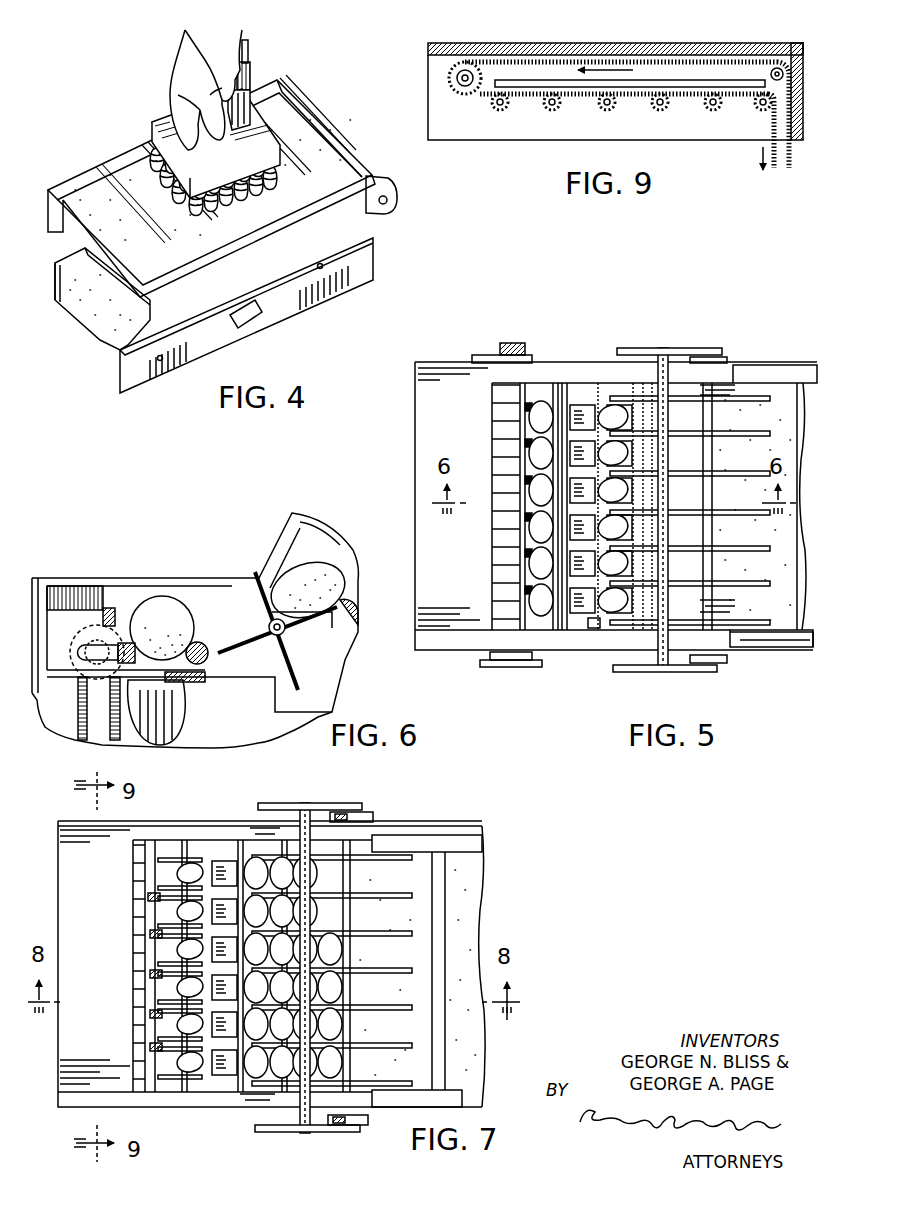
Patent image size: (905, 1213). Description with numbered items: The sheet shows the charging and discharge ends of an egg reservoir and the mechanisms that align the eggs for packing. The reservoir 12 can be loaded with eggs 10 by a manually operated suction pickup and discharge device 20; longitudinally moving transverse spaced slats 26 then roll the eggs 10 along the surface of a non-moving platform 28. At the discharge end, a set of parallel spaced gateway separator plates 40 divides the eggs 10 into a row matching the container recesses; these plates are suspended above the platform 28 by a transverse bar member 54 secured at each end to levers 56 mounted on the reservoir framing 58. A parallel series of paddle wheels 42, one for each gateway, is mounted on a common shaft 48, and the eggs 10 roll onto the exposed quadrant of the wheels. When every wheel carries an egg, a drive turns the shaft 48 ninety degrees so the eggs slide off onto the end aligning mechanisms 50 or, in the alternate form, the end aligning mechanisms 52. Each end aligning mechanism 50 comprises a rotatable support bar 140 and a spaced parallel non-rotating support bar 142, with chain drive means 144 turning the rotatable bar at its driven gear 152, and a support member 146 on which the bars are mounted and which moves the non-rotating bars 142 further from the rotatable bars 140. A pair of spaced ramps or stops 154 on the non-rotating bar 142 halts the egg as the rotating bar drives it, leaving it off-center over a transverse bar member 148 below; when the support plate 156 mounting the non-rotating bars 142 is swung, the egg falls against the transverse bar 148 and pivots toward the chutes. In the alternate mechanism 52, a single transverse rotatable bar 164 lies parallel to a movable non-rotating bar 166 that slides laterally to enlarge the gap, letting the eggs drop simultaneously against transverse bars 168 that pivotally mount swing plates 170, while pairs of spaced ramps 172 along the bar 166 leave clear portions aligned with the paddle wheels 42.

In FIG. 5, the eggs 10 is at (611, 616).
In FIG. 6, the eggs 10 is at (158, 598).
In FIG. 7, the eggs 10 is at (344, 953).
In FIG. 4, the reservoir 12 is at (137, 142).
In FIG. 5, the reservoir 12 is at (779, 363).
In FIG. 7, the reservoir 12 is at (397, 826).
In FIG. 4, the manually operated suction pickup and discharge device 20 is at (176, 114).
In FIG. 4, the transverse spaced slats 26 is at (206, 230).
In FIG. 5, the transverse spaced slats 26 is at (698, 581).
In FIG. 7, the transverse spaced slats 26 is at (425, 932).
In FIG. 4, the platform 28 is at (101, 186).
In FIG. 5, the platform 28 is at (727, 417).
In FIG. 7, the platform 28 is at (451, 856).
In FIG. 5, the gateway separator plates 40 is at (738, 550).
In FIG. 6, the gateway separator plates 40 is at (312, 527).
In FIG. 7, the gateway separator plates 40 is at (375, 1050).
In FIG. 5, the paddle wheels 42 is at (592, 404).
In FIG. 6, the paddle wheels 42 is at (292, 661).
In FIG. 7, the paddle wheels 42 is at (226, 860).
In FIG. 5, the common shaft 48 is at (595, 626).
In FIG. 6, the common shaft 48 is at (292, 634).
In FIG. 7, the end aligning mechanisms 50 is at (197, 850).
In FIG. 5, the end aligning mechanisms 52 is at (546, 386).
In FIG. 6, the end aligning mechanisms 52 is at (206, 644).
In FIG. 5, the transverse bar member 54 is at (664, 577).
In FIG. 7, the transverse bar member 54 is at (342, 990).
In FIG. 5, the levers 56 is at (655, 352).
In FIG. 7, the levers 56 is at (340, 805).
In FIG. 4, the reservoir framing 58 is at (222, 280).
In FIG. 5, the reservoir framing 58 is at (771, 650).
In FIG. 7, the rotatable support bar 140 is at (160, 1047).
In FIG. 7, the non-rotating support bar 142 is at (160, 1015).
In FIG. 9, the chain drive means 144 is at (528, 96).
In FIG. 9, the support member 146 is at (500, 134).
In FIG. 7, the transverse bar member 148 is at (160, 934).
In FIG. 9, the driven gear 152 is at (657, 107).
In FIG. 7, the ramps or stops 154 is at (160, 974).
In FIG. 7, the support plate 156 is at (148, 898).
In FIG. 5, the transverse rotatable bar 164 is at (563, 398).
In FIG. 6, the transverse rotatable bar 164 is at (209, 656).
In FIG. 5, the movable non-rotating bar 166 is at (528, 388).
In FIG. 5, the transverse bars 168 is at (525, 525).
In FIG. 6, the transverse bars 168 is at (188, 691).
In FIG. 6, the swing plates 170 is at (170, 717).
In FIG. 5, the ramps 172 is at (525, 432).
In FIG. 6, the ramps 172 is at (127, 641).